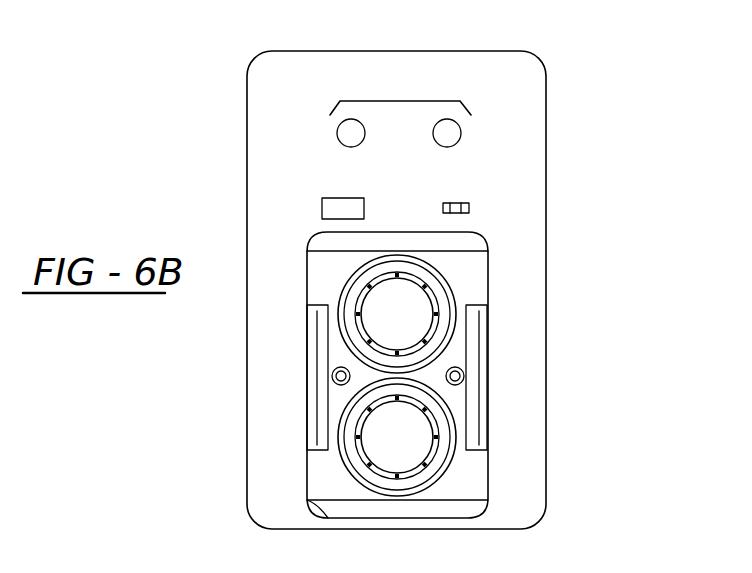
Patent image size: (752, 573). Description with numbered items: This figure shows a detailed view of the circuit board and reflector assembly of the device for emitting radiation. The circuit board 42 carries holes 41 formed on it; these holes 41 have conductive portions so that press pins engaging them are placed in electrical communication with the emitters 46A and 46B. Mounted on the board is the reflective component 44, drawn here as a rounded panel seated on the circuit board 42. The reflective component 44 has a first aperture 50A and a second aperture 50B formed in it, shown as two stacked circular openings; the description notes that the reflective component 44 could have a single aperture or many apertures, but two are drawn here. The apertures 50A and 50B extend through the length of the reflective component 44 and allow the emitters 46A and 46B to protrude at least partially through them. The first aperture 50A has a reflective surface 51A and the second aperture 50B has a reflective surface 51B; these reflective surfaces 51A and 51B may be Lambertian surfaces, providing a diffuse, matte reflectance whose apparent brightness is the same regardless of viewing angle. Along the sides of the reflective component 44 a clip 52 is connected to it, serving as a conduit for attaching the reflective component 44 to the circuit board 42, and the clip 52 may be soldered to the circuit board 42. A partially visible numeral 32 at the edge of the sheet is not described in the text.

The housing 32 is at (79, 5).
The holes 41 is at (401, 101).
The circuit board 42 is at (525, 126).
The reflective component 44 is at (327, 275).
The clip 52 is at (311, 368).
The reflective surface 51B is at (435, 272).
The second aperture 50B is at (430, 343).
The emitter 46B is at (415, 307).
The reflective surface 51A is at (435, 397).
The first aperture 50A is at (440, 437).
The emitter 46A is at (415, 455).